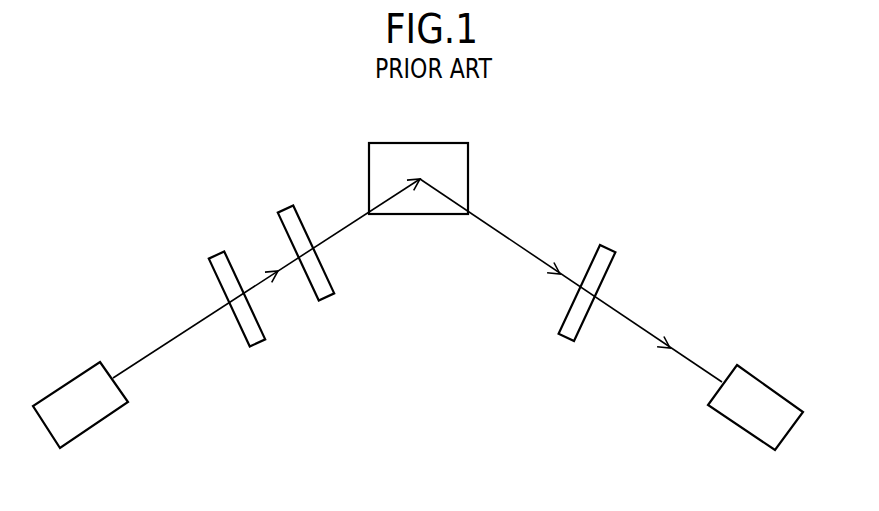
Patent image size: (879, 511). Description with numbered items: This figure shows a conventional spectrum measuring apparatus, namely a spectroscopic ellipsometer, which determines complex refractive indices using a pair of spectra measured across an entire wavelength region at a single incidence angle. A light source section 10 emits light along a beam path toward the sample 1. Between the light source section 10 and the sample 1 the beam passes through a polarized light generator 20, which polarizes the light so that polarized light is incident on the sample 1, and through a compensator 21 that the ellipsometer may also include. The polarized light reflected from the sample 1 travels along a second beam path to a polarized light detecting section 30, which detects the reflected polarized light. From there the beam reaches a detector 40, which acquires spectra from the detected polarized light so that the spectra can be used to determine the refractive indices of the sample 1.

The sample 1 is at (445, 152).
The light source section 10 is at (80, 422).
The polarized light generator 20 is at (262, 335).
The compensator 21 is at (333, 290).
The polarized light detecting section 30 is at (607, 258).
The detector 40 is at (755, 387).